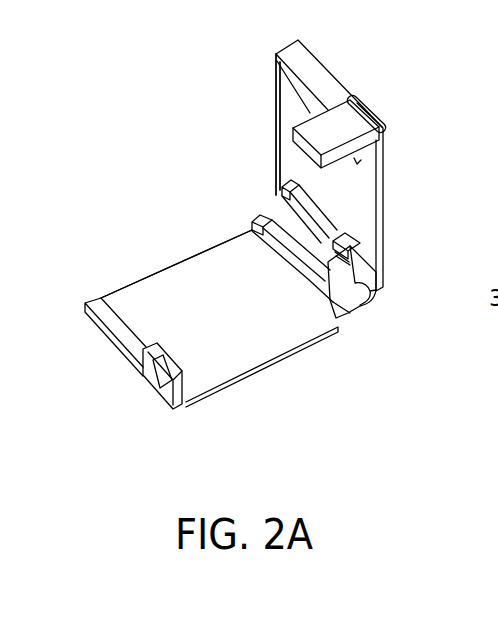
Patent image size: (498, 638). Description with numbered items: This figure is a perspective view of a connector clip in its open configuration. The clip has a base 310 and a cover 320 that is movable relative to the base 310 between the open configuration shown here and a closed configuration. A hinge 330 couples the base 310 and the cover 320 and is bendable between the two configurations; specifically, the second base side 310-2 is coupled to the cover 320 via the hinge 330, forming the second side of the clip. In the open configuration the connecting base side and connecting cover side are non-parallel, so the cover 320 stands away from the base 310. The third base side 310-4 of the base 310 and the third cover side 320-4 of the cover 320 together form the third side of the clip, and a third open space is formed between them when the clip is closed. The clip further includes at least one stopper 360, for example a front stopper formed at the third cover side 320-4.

The base 310 is at (115, 290).
The second base side 310-2 is at (272, 213).
The third base side 310-4 is at (143, 282).
The cover 320 is at (394, 176).
The third cover side 320-4 is at (276, 97).
The hinge 330 is at (336, 284).
The stopper 360 is at (334, 230).